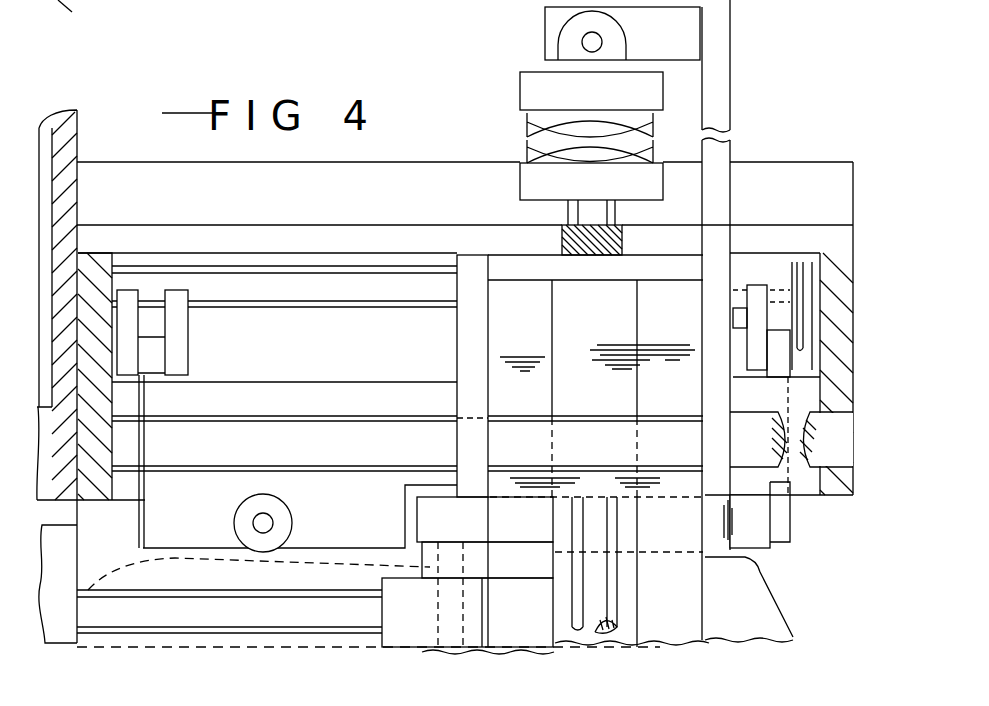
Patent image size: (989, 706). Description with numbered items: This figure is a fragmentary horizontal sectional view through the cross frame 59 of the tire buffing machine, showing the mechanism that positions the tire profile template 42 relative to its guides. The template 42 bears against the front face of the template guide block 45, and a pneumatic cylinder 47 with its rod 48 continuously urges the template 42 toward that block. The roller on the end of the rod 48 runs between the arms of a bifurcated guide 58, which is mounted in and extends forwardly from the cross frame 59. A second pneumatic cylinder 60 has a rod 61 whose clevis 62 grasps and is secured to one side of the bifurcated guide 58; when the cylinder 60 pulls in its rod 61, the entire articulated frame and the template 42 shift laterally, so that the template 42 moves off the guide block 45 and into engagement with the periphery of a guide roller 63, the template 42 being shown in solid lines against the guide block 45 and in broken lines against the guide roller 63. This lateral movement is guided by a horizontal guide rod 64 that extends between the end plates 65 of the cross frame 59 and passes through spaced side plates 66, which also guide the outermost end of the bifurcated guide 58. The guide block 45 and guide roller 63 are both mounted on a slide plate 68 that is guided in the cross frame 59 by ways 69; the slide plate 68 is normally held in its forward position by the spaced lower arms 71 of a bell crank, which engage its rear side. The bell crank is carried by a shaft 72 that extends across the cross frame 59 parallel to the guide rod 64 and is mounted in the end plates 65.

The template 42 is at (178, 555).
The template guide block 45 is at (758, 552).
The pneumatic cylinder 47 is at (527, 119).
The rod 48 is at (620, 590).
The bifurcated guide 58 is at (716, 612).
The cross frame 59 is at (804, 155).
The pneumatic cylinder 60 is at (78, 615).
The rod 61 is at (337, 587).
The clevis 62 is at (445, 577).
The guide roller 63 is at (288, 494).
The horizontal guide rod 64 is at (237, 415).
The end plates 65 is at (123, 493).
The side plates 66 is at (733, 278).
The slide plate 68 is at (356, 378).
The ways 69 is at (147, 498).
The lower arms 71 is at (146, 322).
The shaft 72 is at (305, 318).